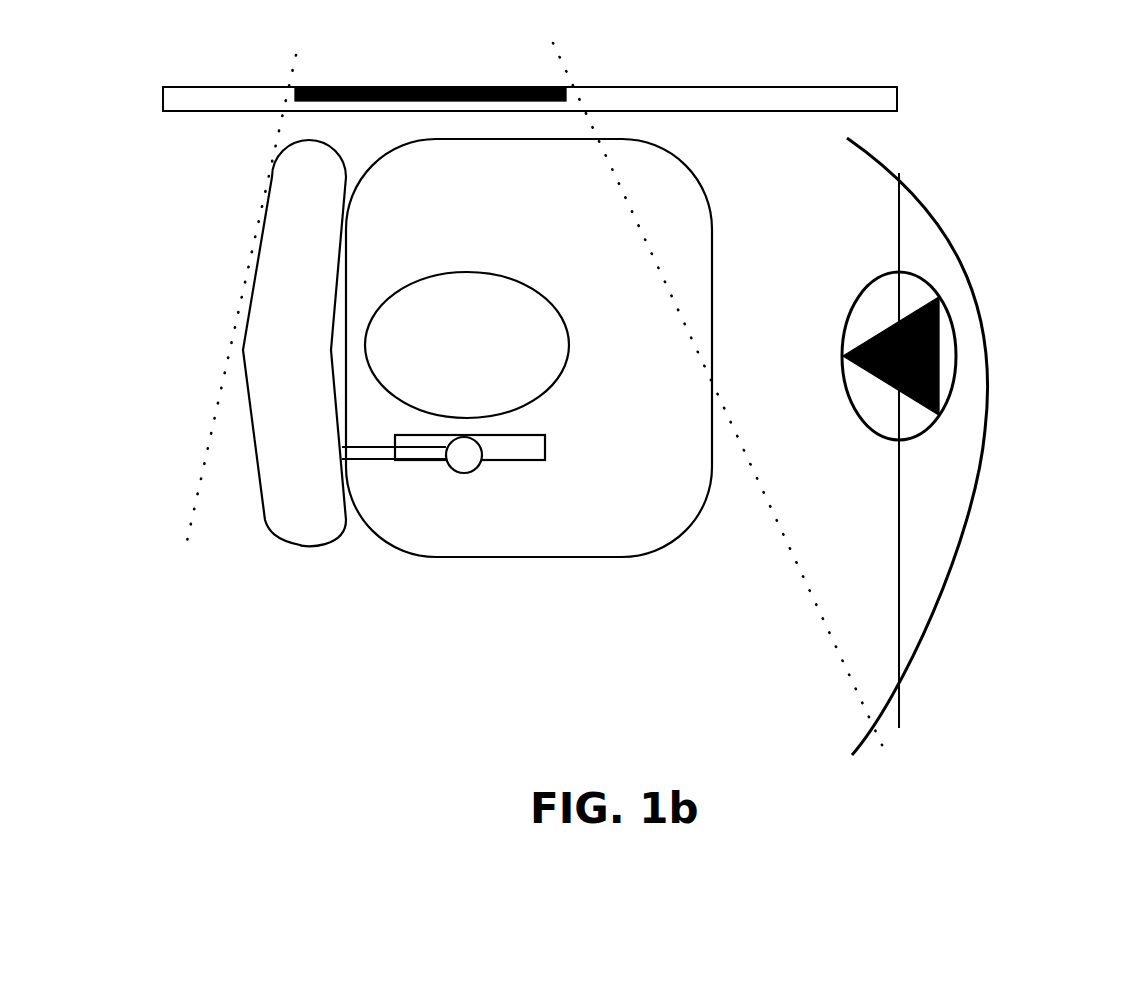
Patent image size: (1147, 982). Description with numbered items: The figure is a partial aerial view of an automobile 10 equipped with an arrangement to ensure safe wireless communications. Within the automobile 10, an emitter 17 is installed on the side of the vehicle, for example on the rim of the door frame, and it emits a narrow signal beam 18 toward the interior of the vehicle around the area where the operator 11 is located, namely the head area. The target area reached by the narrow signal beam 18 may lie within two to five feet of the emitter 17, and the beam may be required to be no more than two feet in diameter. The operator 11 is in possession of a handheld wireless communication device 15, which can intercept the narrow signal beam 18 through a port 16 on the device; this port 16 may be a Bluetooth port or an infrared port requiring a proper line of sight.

The movable vehicle 10 is at (957, 356).
The operator 11 is at (571, 349).
The handheld wireless communication device 15 is at (523, 462).
The port 16 is at (463, 473).
The emitter 17 is at (490, 84).
The narrow signal beam 18 is at (638, 230).